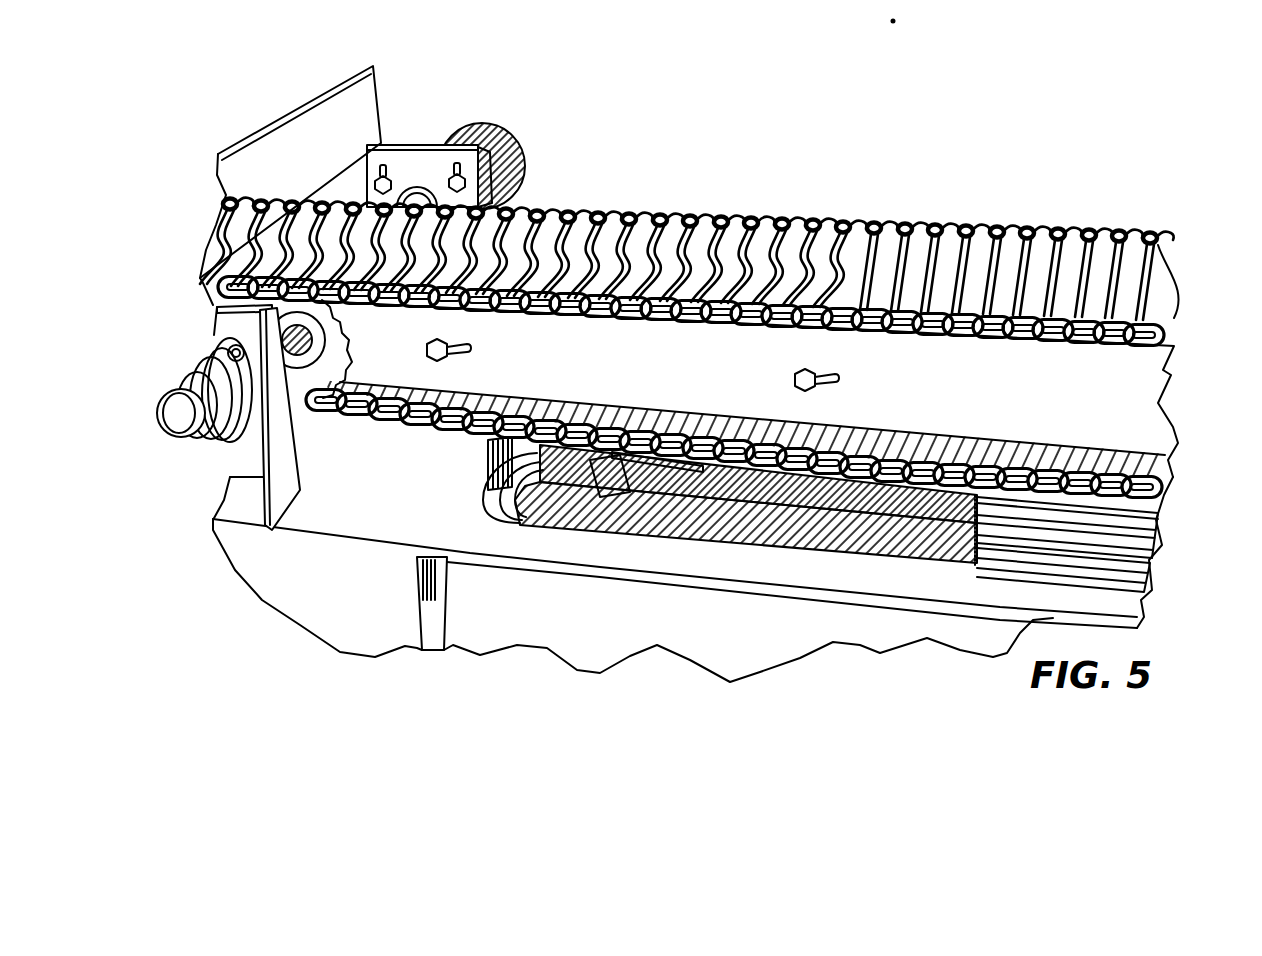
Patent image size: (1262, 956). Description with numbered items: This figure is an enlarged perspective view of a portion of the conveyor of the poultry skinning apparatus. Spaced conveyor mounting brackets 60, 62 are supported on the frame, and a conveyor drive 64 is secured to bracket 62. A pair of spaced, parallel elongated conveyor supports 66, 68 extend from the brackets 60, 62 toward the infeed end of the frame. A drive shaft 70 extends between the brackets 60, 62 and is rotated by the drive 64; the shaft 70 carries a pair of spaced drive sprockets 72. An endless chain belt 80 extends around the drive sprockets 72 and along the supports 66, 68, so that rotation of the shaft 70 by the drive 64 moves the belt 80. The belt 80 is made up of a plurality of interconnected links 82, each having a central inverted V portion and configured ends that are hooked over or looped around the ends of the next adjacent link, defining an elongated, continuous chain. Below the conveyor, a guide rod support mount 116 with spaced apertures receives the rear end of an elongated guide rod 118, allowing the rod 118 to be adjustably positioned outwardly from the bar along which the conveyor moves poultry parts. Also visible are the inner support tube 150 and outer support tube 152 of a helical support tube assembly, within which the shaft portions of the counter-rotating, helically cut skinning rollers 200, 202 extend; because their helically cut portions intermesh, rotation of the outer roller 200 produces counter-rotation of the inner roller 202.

The conveyor mounting bracket 60 is at (193, 373).
The conveyor mounting bracket 62 is at (414, 160).
The conveyor drive 64 is at (487, 132).
The conveyor support 66 is at (572, 378).
The conveyor support 68 is at (820, 247).
The drive shaft 70 is at (272, 275).
The drive sprocket 72 is at (307, 247).
The endless chain belt 80 is at (615, 207).
The link 82 is at (710, 213).
The guide rod support mount 116 is at (593, 513).
The guide rod 118 is at (757, 513).
The inner support tube 150 is at (1130, 535).
The outer support tube 152 is at (1120, 558).
The skinning roller 200 is at (490, 507).
The skinning roller 202 is at (517, 460).